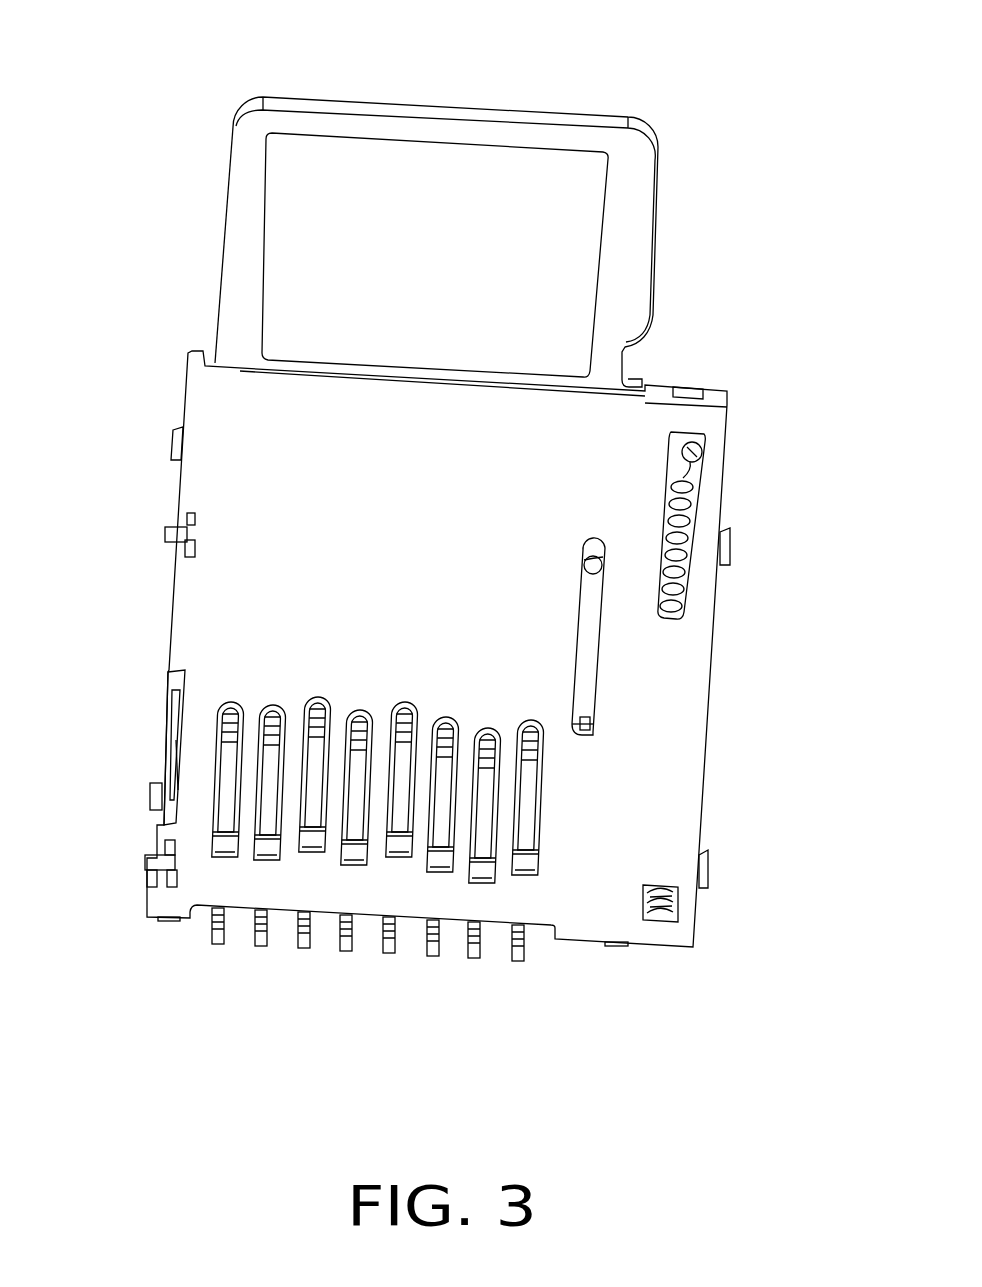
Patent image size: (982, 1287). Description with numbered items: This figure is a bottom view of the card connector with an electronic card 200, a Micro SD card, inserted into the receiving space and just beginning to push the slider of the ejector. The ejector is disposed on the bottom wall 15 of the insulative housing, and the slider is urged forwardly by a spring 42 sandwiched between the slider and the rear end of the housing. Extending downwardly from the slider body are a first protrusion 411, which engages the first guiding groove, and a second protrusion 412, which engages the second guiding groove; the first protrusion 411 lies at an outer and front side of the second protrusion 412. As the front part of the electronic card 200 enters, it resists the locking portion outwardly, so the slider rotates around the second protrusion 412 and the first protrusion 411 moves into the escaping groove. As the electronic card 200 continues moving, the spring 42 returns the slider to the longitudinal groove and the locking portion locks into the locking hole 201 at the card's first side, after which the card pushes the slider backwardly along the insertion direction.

The bottom wall 15 is at (255, 467).
The electronic card 200 is at (460, 185).
The locking hole 201 is at (628, 353).
The spring 42 is at (680, 518).
The first protrusion 411 is at (692, 452).
The second protrusion 412 is at (597, 567).